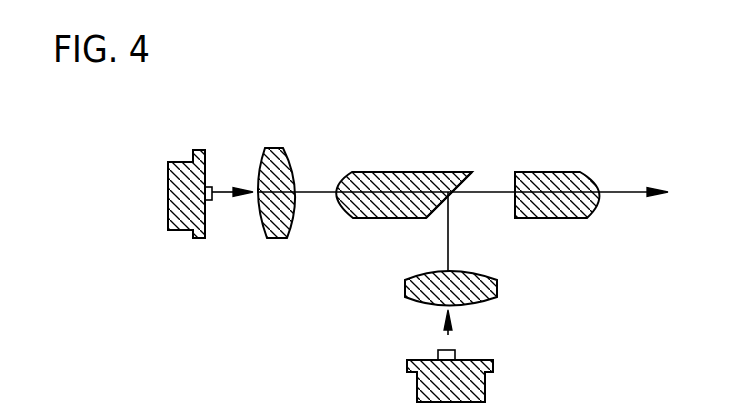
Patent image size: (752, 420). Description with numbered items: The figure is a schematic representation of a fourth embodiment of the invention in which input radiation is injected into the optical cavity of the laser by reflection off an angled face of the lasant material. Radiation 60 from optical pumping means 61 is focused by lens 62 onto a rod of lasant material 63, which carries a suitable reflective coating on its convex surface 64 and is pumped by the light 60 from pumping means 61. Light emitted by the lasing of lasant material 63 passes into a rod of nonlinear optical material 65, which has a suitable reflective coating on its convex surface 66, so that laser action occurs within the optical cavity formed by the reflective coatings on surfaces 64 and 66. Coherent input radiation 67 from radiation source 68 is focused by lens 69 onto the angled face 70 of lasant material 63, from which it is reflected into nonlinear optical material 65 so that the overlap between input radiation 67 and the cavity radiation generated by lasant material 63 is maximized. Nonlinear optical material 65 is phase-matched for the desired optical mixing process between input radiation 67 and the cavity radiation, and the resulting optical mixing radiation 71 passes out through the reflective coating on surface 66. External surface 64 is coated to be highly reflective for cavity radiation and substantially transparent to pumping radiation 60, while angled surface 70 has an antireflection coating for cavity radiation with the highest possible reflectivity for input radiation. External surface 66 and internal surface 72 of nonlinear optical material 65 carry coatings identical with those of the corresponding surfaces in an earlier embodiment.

The radiation 60 is at (228, 189).
The optical pumping means 61 is at (180, 162).
The lens 62 is at (276, 150).
The rod of lasant material 63 is at (418, 173).
The convex surface 64 is at (338, 185).
The rod of nonlinear optical material 65 is at (582, 189).
The convex surface 66 is at (597, 181).
The coherent input radiation 67 is at (448, 335).
The radiation source 68 is at (478, 385).
The lens 69 is at (497, 283).
The angled face 70 is at (452, 196).
The optical mixing radiation 71 is at (634, 193).
The internal surface 72 is at (515, 204).